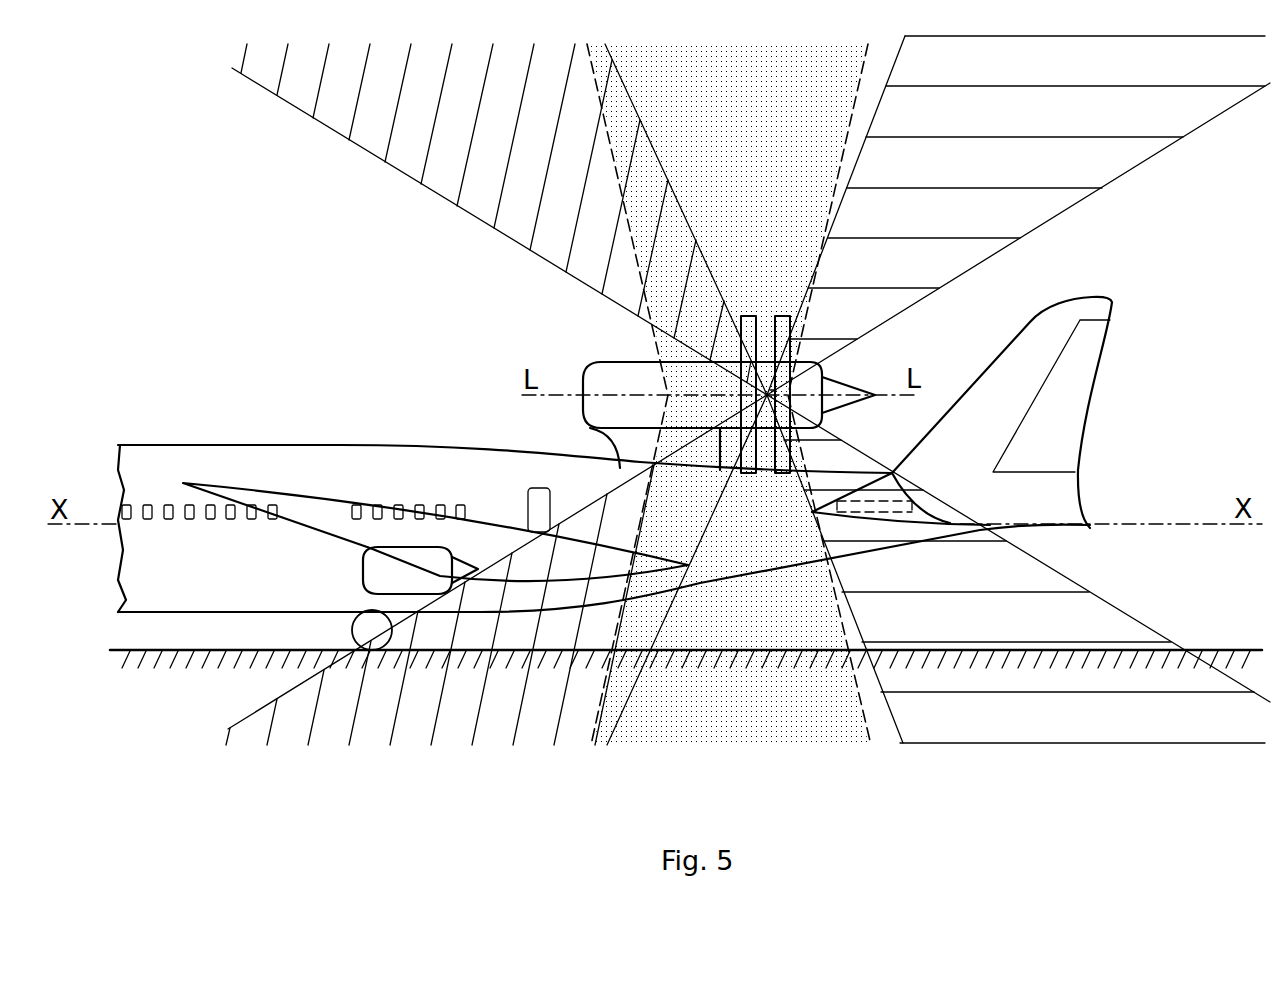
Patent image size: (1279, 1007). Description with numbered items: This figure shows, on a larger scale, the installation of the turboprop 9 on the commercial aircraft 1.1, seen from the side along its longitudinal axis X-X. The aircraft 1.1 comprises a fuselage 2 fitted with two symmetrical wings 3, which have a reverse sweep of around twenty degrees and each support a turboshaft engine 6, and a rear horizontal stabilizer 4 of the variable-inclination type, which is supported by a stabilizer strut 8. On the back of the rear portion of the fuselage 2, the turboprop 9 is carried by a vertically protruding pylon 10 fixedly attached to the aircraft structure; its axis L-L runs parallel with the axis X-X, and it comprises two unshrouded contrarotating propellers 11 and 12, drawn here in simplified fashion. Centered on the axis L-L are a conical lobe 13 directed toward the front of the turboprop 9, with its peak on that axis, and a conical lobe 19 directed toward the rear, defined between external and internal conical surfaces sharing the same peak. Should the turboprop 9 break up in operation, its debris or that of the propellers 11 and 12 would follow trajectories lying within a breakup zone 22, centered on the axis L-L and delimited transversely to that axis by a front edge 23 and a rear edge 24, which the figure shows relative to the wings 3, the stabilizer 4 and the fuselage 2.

The commercial aircraft 1.1 is at (346, 358).
The fuselage 2 is at (152, 468).
The wings 3 is at (275, 497).
The rear horizontal stabilizer 4 is at (870, 508).
The turboshaft engine 6 is at (364, 563).
The stabilizer strut 8 is at (882, 500).
The turboprop 9 is at (598, 364).
The pylon 10 is at (612, 437).
The propeller 11 is at (747, 314).
The propeller 12 is at (786, 314).
The conical lobe 13 is at (530, 207).
The conical lobe 19 is at (1118, 157).
The breakup zone 22 is at (803, 603).
The front edge 23 is at (597, 673).
The rear edge 24 is at (843, 622).